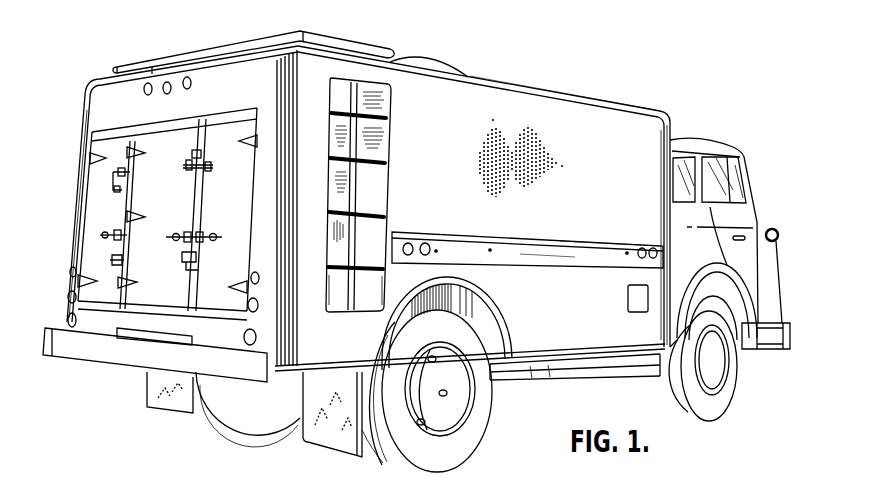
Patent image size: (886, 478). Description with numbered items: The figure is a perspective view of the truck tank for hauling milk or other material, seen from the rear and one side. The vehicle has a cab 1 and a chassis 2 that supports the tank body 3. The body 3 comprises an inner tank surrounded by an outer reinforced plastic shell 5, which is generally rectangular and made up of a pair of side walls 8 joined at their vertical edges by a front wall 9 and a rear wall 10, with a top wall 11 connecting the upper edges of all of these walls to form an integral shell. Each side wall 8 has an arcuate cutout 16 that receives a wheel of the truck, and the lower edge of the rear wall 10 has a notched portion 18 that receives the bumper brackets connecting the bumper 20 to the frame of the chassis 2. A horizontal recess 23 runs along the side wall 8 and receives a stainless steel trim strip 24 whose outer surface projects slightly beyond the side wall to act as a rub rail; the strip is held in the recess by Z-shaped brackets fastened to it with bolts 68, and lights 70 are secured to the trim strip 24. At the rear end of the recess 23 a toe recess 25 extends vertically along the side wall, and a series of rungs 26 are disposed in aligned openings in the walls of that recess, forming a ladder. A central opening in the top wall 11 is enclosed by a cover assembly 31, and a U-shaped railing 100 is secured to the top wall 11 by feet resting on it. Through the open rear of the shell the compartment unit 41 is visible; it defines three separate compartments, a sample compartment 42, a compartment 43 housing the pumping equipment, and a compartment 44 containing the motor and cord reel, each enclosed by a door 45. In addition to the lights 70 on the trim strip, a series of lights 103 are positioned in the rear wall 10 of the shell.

The cab 1 is at (750, 202).
The chassis 2 is at (578, 368).
The tank body 3 is at (384, 208).
The outer reinforced plastic shell 5 is at (541, 97).
The side walls 8 is at (447, 165).
The front wall 9 is at (671, 135).
The rear wall 10 is at (253, 62).
The top wall 11 is at (492, 80).
The arcuate cutouts 16 is at (392, 338).
The notched portion 18 is at (133, 338).
The bumper 20 is at (155, 367).
The horizontal recess 23 is at (568, 240).
The trim strip 24 is at (527, 246).
The toe recess 25 is at (342, 283).
The rungs 26 is at (357, 195).
The cover assembly 31 is at (449, 64).
The compartment unit 41 is at (145, 214).
The sample compartment 42 is at (100, 178).
The pumping equipment compartment 43 is at (165, 140).
The motor and cord reel compartment 44 is at (228, 130).
The door 45 is at (90, 228).
The bolts 68 is at (572, 252).
The lights 70 is at (410, 243).
The U-shaped railing 100 is at (253, 42).
The lights 103 is at (187, 76).